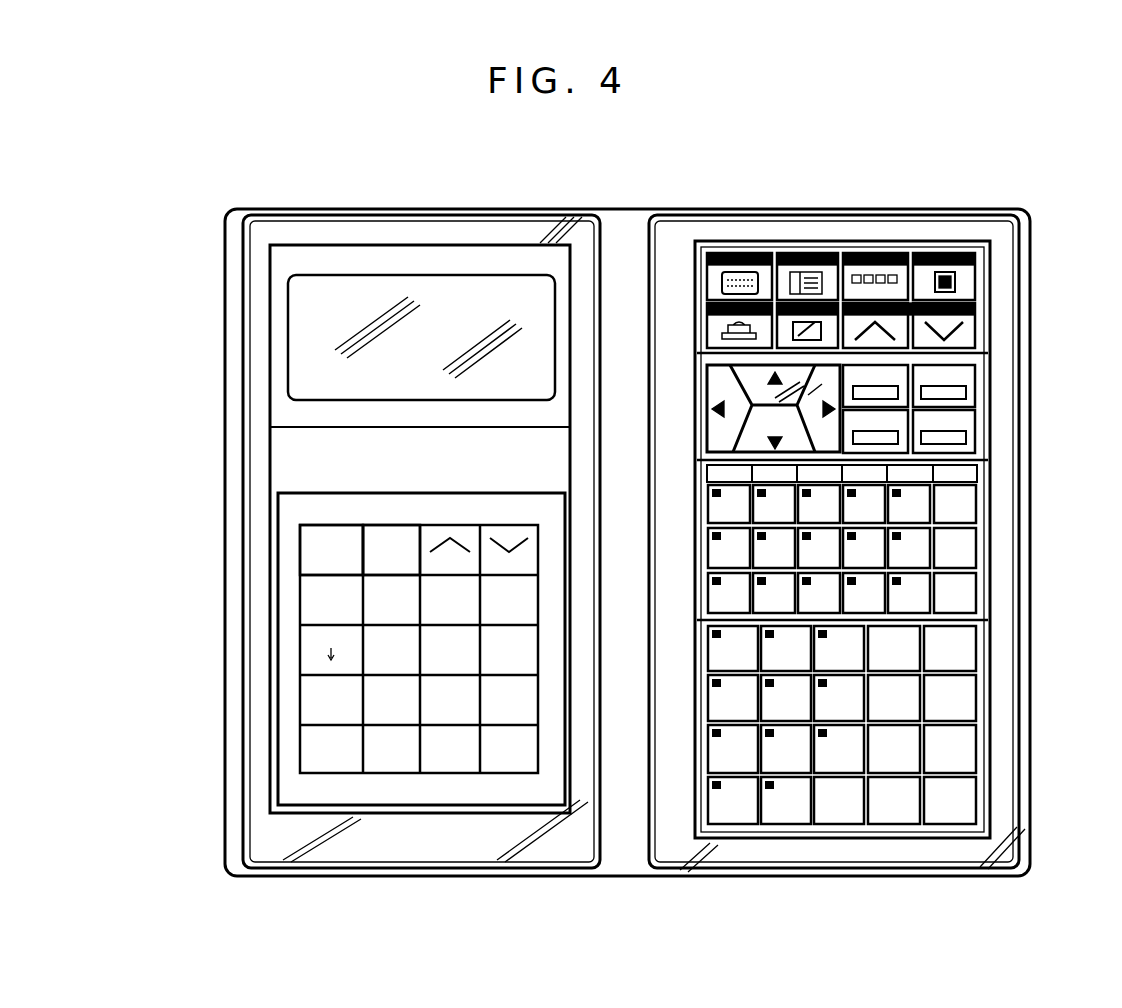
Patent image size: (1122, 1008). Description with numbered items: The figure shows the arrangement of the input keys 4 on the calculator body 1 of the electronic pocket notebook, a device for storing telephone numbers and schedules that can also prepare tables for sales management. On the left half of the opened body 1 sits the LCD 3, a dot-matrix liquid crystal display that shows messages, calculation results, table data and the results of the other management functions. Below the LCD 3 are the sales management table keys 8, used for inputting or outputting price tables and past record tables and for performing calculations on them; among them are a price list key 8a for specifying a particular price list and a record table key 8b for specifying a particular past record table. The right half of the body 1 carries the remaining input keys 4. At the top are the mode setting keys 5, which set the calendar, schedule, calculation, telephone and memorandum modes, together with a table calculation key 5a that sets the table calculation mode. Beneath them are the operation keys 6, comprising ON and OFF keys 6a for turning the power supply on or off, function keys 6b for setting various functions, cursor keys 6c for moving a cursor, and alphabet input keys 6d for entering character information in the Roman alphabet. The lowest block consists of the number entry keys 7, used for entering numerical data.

The calculator body 1 is at (806, 167).
The LCD 3 is at (298, 318).
The input keys 4 is at (412, 838).
The mode setting keys 5 is at (1080, 240).
The table calculation key 5a is at (975, 285).
The operation keys 6 is at (1080, 617).
The ON and OFF keys 6a is at (975, 390).
The function keys 6b is at (975, 432).
The cursor keys 6c is at (803, 457).
The alphabet input keys 6d is at (1000, 463).
The number entry keys 7 is at (1080, 617).
The sales management table keys 8 is at (168, 820).
The price list key 8a is at (300, 543).
The record table key 8b is at (300, 567).